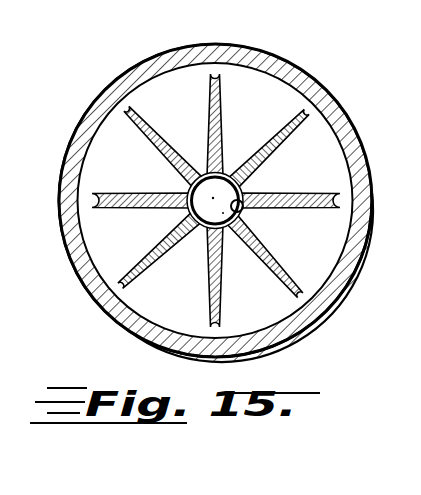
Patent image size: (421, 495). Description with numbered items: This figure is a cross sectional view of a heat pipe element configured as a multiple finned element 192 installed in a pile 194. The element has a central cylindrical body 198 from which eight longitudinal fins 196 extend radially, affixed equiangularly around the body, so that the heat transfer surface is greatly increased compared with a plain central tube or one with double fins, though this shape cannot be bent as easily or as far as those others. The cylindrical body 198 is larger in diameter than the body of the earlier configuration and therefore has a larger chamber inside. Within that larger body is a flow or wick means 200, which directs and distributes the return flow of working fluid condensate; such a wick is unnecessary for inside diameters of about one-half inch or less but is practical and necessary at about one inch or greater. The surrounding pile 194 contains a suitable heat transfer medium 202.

The pile 194 is at (312, 81).
The longitudinal fins 196 is at (129, 121).
The multiple finned element 192 is at (88, 206).
The cylindrical body 198 is at (194, 241).
The flow or wick means 200 is at (247, 210).
The heat transfer medium 202 is at (245, 319).